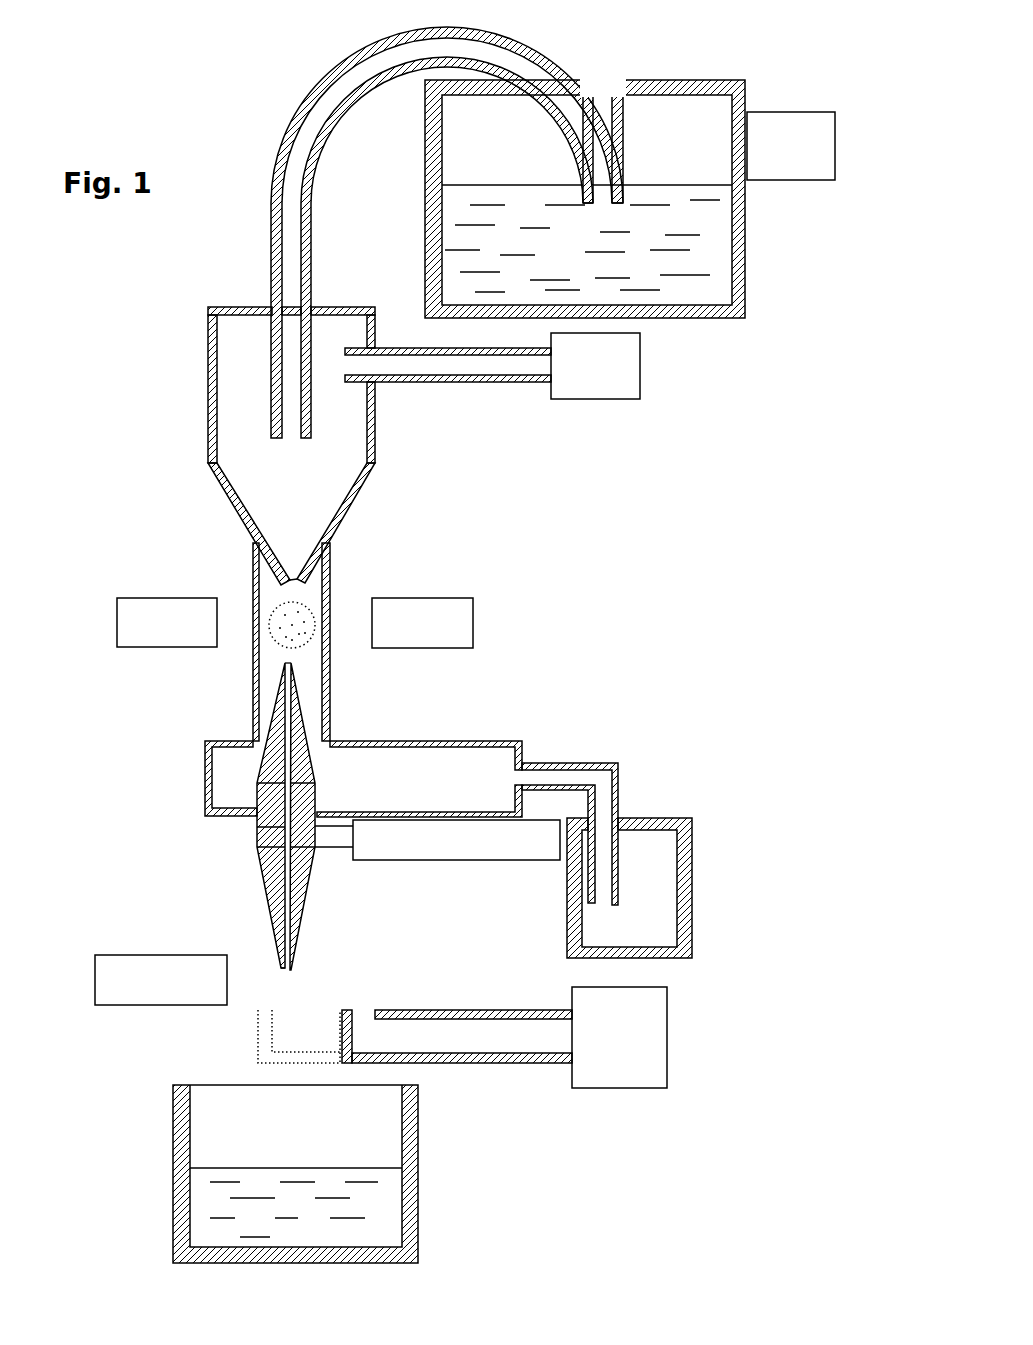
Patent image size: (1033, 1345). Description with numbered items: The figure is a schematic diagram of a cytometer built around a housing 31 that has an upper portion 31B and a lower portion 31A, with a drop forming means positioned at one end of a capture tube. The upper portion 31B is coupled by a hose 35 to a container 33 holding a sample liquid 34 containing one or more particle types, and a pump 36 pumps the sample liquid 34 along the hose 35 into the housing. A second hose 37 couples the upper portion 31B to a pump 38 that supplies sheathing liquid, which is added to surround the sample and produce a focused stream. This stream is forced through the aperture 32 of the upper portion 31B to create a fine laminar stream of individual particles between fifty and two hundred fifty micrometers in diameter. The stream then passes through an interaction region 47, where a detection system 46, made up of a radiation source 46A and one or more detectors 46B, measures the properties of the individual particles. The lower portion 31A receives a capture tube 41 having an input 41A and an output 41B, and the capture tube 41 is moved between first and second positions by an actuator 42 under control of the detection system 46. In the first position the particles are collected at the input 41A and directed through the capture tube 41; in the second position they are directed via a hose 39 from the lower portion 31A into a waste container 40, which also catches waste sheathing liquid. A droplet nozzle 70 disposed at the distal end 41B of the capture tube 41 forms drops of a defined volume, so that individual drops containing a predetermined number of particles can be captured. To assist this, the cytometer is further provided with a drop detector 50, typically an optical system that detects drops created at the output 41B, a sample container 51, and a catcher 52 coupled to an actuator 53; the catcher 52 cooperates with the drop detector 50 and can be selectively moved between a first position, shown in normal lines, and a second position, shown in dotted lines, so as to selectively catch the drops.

The housing 31 is at (480, 518).
The lower portion of housing 31A is at (205, 767).
The upper portion of housing 31B is at (370, 468).
The aperture 32 is at (300, 572).
The container 33 is at (725, 79).
The sample liquid 34 is at (708, 273).
The hose 35 is at (282, 143).
The pump 36 is at (791, 146).
The hose 37 is at (472, 383).
The pump 38 is at (595, 366).
The hose 39 is at (613, 762).
The waste container 40 is at (690, 892).
The capture tube 41 is at (257, 822).
The capture tube input 41A is at (283, 670).
The capture tube output 41B is at (281, 962).
The actuator 42 is at (437, 840).
The detection system 46 is at (115, 582).
The radiation source 46A is at (167, 622).
The detector 46B is at (422, 623).
The interaction region 47 is at (280, 615).
The drop detector 50 is at (161, 980).
The sample container 51 is at (178, 1197).
The catcher 52 is at (487, 1063).
The actuator 53 is at (619, 1037).
The droplet nozzle 70 is at (327, 953).